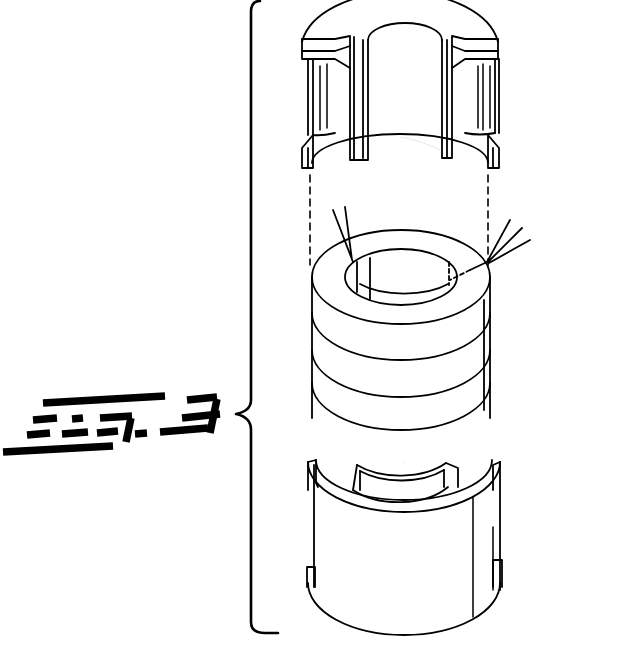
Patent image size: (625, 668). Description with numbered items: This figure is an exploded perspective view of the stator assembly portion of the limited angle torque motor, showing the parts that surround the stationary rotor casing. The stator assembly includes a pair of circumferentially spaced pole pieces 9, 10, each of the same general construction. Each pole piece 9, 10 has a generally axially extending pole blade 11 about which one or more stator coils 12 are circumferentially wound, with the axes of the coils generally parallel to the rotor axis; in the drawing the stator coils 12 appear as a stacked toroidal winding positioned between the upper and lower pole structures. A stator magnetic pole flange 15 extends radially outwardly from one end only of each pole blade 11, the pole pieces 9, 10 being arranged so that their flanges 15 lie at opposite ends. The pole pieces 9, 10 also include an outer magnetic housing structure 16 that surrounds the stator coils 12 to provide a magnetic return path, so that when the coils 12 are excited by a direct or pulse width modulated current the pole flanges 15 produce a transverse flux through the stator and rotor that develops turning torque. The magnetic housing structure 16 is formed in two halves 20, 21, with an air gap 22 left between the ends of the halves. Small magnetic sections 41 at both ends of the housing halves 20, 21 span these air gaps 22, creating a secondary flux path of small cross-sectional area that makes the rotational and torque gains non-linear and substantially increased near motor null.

The pole piece 9 is at (433, 132).
The pole piece 10 is at (431, 490).
The pole blade 11 is at (442, 110).
The stator coil 12 is at (465, 362).
The stator magnetic pole flange 15 is at (318, 62).
The magnetic housing structure 16 is at (477, 25).
The magnetic housing structure half 20 is at (470, 80).
The magnetic housing structure half 21 is at (460, 613).
The air gap 22 is at (308, 107).
The small magnetic section 41 is at (302, 50).